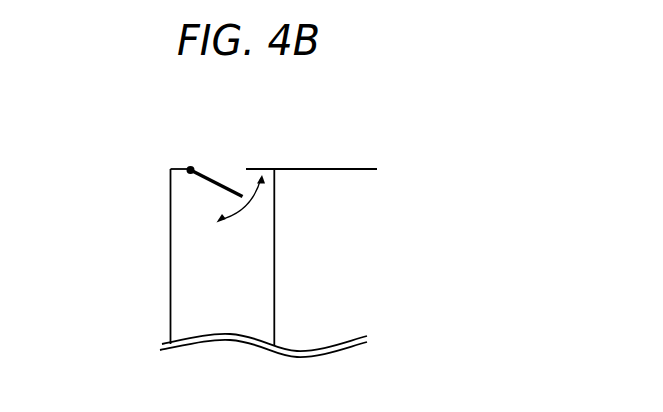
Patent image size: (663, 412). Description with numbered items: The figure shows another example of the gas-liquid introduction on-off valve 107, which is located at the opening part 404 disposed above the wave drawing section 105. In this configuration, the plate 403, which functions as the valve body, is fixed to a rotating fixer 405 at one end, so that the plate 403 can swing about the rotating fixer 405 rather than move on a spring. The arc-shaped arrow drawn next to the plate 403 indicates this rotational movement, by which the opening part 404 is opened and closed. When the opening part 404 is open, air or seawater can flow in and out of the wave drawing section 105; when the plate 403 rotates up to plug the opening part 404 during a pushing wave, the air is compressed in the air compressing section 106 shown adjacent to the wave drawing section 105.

The wave drawing section 105 is at (188, 250).
The air compressing section 106 is at (308, 305).
The gas-liquid introduction on-off valve 107 is at (255, 150).
The plate 403 is at (220, 189).
The opening part 404 is at (220, 168).
The rotating fixer 405 is at (190, 168).